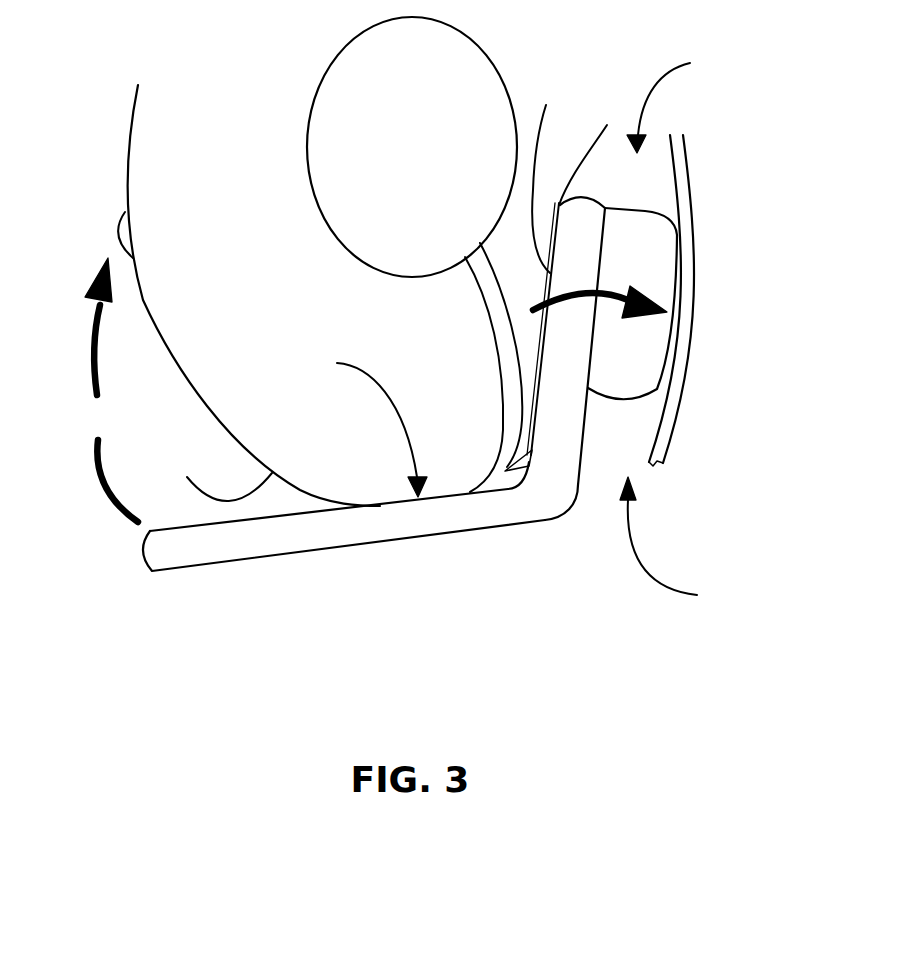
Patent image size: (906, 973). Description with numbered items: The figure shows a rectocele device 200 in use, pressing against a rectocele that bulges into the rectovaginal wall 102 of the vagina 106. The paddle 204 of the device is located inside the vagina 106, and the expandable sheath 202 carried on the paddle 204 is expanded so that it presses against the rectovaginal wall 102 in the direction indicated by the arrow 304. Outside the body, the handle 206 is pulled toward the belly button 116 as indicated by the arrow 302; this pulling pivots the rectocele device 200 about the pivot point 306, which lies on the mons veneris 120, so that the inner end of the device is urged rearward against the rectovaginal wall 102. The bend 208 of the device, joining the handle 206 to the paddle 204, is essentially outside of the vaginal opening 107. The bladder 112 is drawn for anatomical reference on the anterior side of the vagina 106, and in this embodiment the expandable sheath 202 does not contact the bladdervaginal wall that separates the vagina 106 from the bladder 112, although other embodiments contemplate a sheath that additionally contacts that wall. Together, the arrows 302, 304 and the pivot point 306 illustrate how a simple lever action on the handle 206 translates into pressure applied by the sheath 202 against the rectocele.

The rectovaginal wall 102 is at (673, 415).
The vagina 106 is at (685, 102).
The vaginal opening 107 is at (684, 543).
The bladder 112 is at (307, 137).
The belly button 116 is at (117, 233).
The mons veneris 120 is at (218, 475).
The rectocele device 200 is at (384, 399).
The expandable sheath 202 is at (645, 207).
The paddle 204 is at (546, 105).
The handle 206 is at (243, 561).
The bend 208 is at (568, 500).
The arrow 302 is at (111, 390).
The arrow 304 is at (600, 289).
The pivot point 306 is at (357, 425).